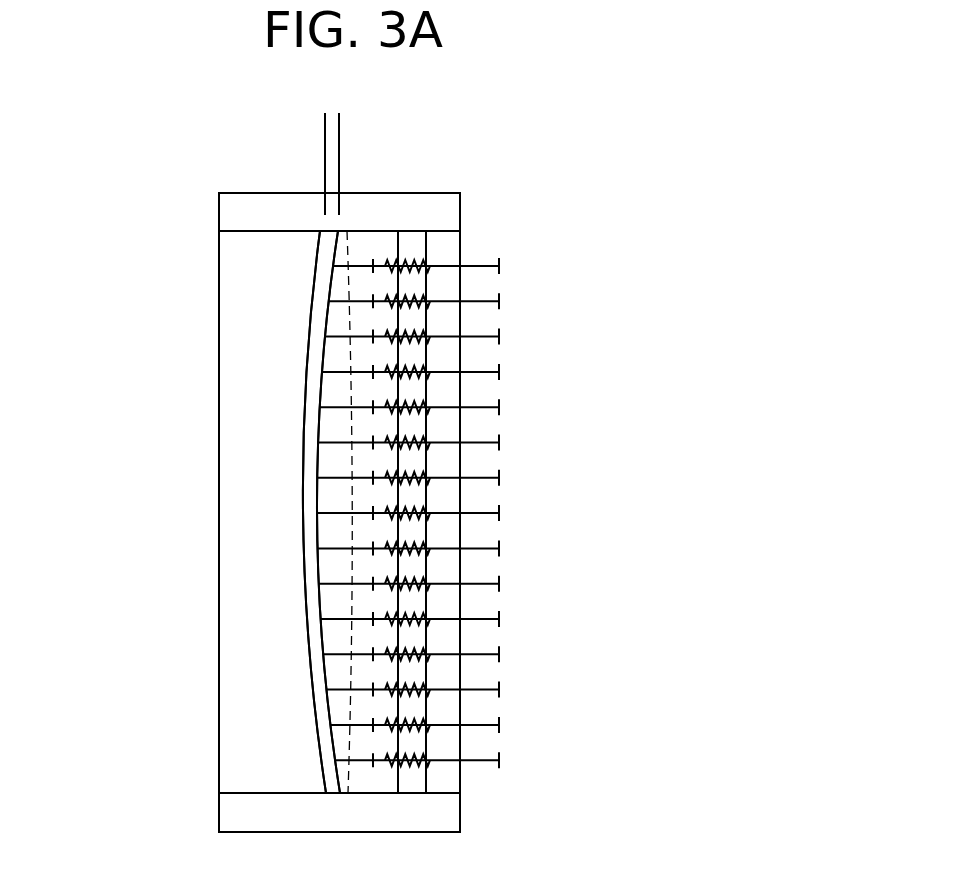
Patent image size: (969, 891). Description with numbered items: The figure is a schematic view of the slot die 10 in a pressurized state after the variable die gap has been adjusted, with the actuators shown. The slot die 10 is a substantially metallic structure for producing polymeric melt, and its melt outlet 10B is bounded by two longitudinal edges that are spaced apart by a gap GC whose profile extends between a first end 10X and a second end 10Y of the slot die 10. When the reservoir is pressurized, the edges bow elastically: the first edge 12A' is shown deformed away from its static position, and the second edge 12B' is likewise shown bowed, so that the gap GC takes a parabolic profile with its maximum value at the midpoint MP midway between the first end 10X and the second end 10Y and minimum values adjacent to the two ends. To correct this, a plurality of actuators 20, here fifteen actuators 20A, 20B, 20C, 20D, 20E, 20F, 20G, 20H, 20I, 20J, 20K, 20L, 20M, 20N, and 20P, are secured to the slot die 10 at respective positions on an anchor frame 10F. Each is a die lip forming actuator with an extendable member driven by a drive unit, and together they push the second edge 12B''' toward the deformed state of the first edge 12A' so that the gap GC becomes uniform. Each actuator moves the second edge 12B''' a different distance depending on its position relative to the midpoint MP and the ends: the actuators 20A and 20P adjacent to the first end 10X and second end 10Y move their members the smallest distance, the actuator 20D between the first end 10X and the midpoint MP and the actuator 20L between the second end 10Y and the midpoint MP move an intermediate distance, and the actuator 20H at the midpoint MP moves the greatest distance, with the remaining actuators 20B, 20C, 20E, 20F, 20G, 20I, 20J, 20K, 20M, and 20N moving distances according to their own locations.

The slot die 10 is at (162, 153).
The first end 10X is at (443, 193).
The second end 10Y is at (390, 832).
The melt outlet 10B is at (323, 707).
The anchor frame 10F is at (410, 777).
The first edge (bowed) 12A' is at (230, 512).
The second edge (bowed) 12B' is at (249, 512).
The second edge (adjusted) 12B''' is at (240, 512).
The midpoint MP is at (303, 535).
The gap GC is at (245, 160).
The plurality of actuators 20 is at (617, 764).
The actuator 20A is at (507, 263).
The actuator 20B is at (507, 298).
The actuator 20C is at (507, 334).
The actuator 20D is at (507, 369).
The actuator 20E is at (507, 404).
The actuator 20F is at (507, 440).
The actuator 20G is at (507, 475).
The actuator 20H is at (507, 510).
The actuator 20I is at (507, 545).
The actuator 20J is at (507, 581).
The actuator 20K is at (507, 616).
The actuator 20L is at (507, 651).
The actuator 20M is at (507, 687).
The actuator 20N is at (507, 722).
The actuator 20P is at (507, 757).